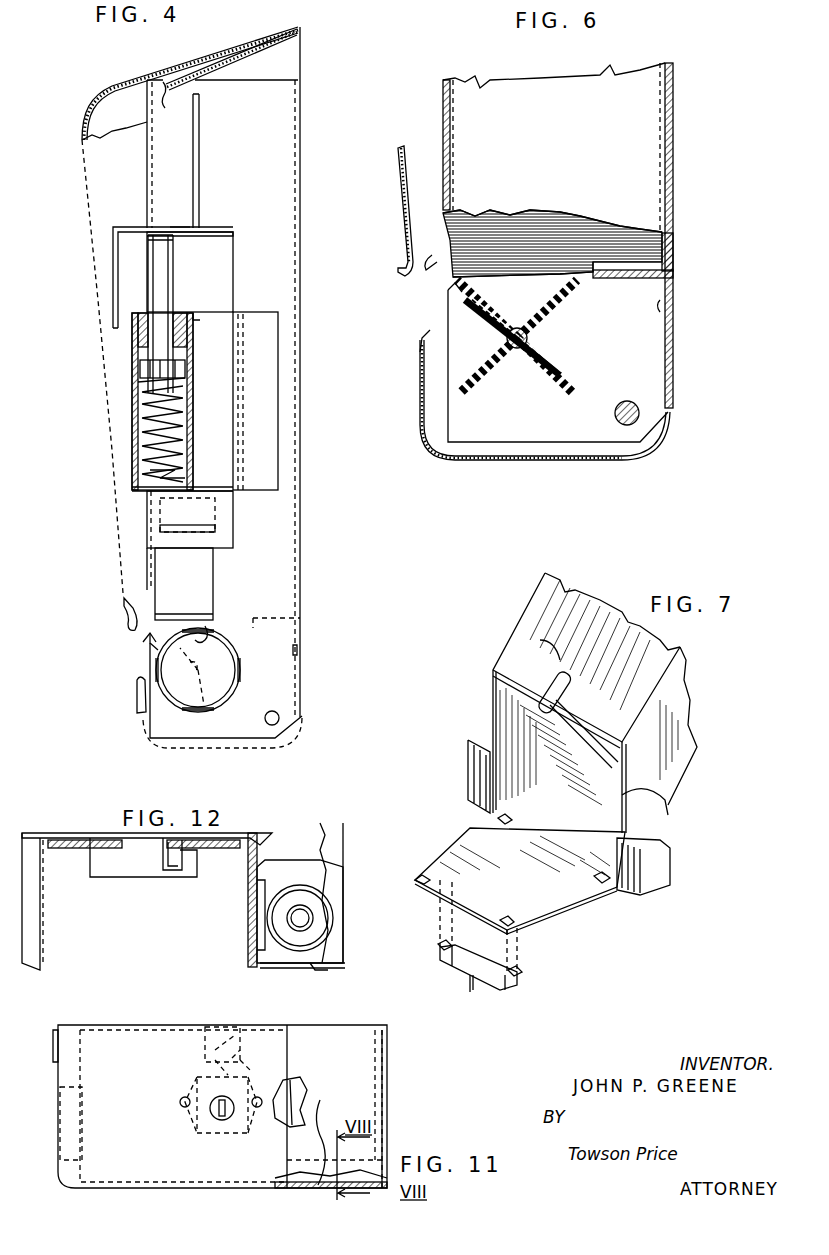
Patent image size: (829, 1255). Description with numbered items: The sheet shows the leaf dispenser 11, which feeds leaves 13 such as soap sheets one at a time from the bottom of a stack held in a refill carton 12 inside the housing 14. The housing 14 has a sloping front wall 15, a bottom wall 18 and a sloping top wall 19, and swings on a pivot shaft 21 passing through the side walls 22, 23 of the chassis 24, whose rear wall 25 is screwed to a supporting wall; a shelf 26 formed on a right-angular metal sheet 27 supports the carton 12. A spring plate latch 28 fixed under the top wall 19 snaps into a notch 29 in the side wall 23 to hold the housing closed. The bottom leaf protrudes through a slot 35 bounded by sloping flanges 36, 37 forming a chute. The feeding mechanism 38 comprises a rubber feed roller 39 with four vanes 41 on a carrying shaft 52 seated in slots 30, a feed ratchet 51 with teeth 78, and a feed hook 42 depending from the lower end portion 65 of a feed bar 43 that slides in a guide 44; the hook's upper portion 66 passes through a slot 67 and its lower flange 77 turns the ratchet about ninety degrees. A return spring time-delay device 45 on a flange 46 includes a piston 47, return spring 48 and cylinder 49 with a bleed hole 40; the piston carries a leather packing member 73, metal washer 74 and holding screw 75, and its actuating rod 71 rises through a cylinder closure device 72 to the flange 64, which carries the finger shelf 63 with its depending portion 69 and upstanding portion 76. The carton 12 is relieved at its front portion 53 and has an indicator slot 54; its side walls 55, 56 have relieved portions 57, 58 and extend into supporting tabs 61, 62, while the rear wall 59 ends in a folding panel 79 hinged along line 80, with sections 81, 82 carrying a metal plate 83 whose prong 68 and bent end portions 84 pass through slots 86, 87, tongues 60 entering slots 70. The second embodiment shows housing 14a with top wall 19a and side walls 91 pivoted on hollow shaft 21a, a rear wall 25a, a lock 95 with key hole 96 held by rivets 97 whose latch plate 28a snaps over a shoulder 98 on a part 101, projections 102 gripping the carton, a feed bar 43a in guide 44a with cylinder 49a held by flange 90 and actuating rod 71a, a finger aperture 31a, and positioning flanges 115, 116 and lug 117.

In FIG. 4, the leaf dispenser 11 is at (76, 264).
In FIG. 6, the leaf dispenser 11 is at (692, 318).
In FIG. 6, the refill carton 12 is at (573, 145).
In FIG. 7, the refill carton 12 is at (705, 760).
In FIG. 6, the leaves 13 is at (603, 248).
In FIG. 6, the housing 14 is at (394, 155).
In FIG. 11, the dispenser housing 14a is at (400, 1112).
In FIG. 6, the front wall 15 is at (402, 232).
In FIG. 6, the bottom wall 18 is at (548, 466).
In FIG. 4, the top wall 19 is at (153, 75).
In FIG. 11, the top wall 19a is at (110, 1156).
In FIG. 4, the pivot shaft 21 is at (279, 716).
In FIG. 6, the pivot shaft 21 is at (640, 416).
In FIG. 11, the pivot shaft 21a is at (52, 1032).
In FIG. 6, the chassis side wall 22 is at (645, 376).
In FIG. 4, the chassis side wall 23 is at (146, 100).
In FIG. 6, the chassis side wall 23 is at (448, 145).
In FIG. 4, the chassis 24 is at (242, 752).
In FIG. 6, the chassis 24 is at (604, 454).
In FIG. 4, the rear wall 25 is at (303, 316).
In FIG. 6, the rear wall 25 is at (676, 158).
In FIG. 12, the rear wall 25a is at (98, 832).
In FIG. 4, the shelf 26 is at (305, 605).
In FIG. 6, the shelf 26 is at (688, 270).
In FIG. 4, the right-angular metal sheet 27 is at (305, 655).
In FIG. 6, the right-angular metal sheet 27 is at (675, 306).
In FIG. 4, the spring plate latch 28 is at (218, 62).
In FIG. 11, the latch plate 28a is at (245, 1068).
In FIG. 4, the notch 29 is at (171, 107).
In FIG. 4, the slots 30 is at (150, 645).
In FIG. 6, the slots 30 is at (450, 296).
In FIG. 11, the finger aperture 31a is at (334, 1139).
In FIG. 4, the slot 35 is at (135, 640).
In FIG. 6, the slot 35 is at (420, 320).
In FIG. 4, the upper flange 36 is at (122, 600).
In FIG. 6, the upper flange 36 is at (432, 255).
In FIG. 4, the lower flange 37 is at (135, 700).
In FIG. 6, the lower flange 37 is at (420, 362).
In FIG. 4, the feeding mechanism 38 is at (134, 215).
In FIG. 6, the feed roller 39 is at (538, 380).
In FIG. 4, the bleed hole 40 is at (185, 468).
In FIG. 6, the vanes 41 is at (570, 295).
In FIG. 4, the feed hook 42 is at (212, 596).
In FIG. 4, the feed bar 43 is at (230, 265).
In FIG. 12, the feed bar 43a is at (280, 970).
In FIG. 4, the guide 44 is at (226, 330).
In FIG. 12, the guide 44a is at (275, 840).
In FIG. 4, the return spring time-delay device 45 is at (198, 396).
In FIG. 4, the flange 46 is at (132, 492).
In FIG. 4, the piston 47 is at (135, 374).
In FIG. 4, the return spring 48 is at (135, 438).
In FIG. 4, the cylinder 49 is at (188, 434).
In FIG. 12, the cylinder 49a is at (318, 968).
In FIG. 4, the feed ratchet 51 is at (225, 672).
In FIG. 4, the carrying shaft 52 is at (198, 715).
In FIG. 6, the carrying shaft 52 is at (540, 326).
In FIG. 7, the relieved front portion 53 is at (540, 640).
In FIG. 7, the slot 54 is at (580, 665).
In FIG. 7, the carton side wall 55 is at (530, 733).
In FIG. 7, the carton side wall 56 is at (678, 742).
In FIG. 7, the relieved portion 57 is at (490, 712).
In FIG. 7, the relieved portion 58 is at (672, 812).
In FIG. 7, the rear wall 59 is at (596, 827).
In FIG. 7, the tongues 60 is at (410, 880).
In FIG. 7, the supporting tab 61 is at (468, 775).
In FIG. 7, the supporting tab 62 is at (662, 872).
In FIG. 4, the shelf 63 is at (178, 220).
In FIG. 4, the flange 64 is at (224, 228).
In FIG. 4, the lower end portion 65 is at (240, 536).
In FIG. 4, the upper portion 66 is at (225, 512).
In FIG. 4, the slot 67 is at (220, 528).
In FIG. 6, the prong 68 is at (676, 245).
In FIG. 7, the prong 68 is at (472, 992).
In FIG. 4, the depending portion 69 is at (112, 285).
In FIG. 7, the slots 70 is at (512, 820).
In FIG. 4, the actuating rod 71 is at (172, 288).
In FIG. 12, the actuating rod 71a is at (318, 920).
In FIG. 4, the cylinder closure device 72 is at (200, 312).
In FIG. 4, the leather packing member 73 is at (186, 372).
In FIG. 4, the metal washer 74 is at (140, 386).
In FIG. 4, the holding screw 75 is at (192, 424).
In FIG. 4, the upstanding portion 76 is at (200, 172).
In FIG. 4, the lower flange 77 is at (218, 630).
In FIG. 4, the ratchet teeth 78 is at (215, 640).
In FIG. 7, the folding panel 79 is at (590, 910).
In FIG. 7, the hinge line 80 is at (575, 862).
In FIG. 7, the panel section 81 is at (462, 832).
In FIG. 7, the panel section 82 is at (436, 860).
In FIG. 7, the bracket 83 is at (448, 980).
In FIG. 7, the bent end portions 84 is at (438, 948).
In FIG. 7, the slot 86 is at (432, 888).
In FIG. 7, the slot 87 is at (520, 930).
In FIG. 12, the flange 90 is at (326, 832).
In FIG. 12, the side walls 91 is at (45, 938).
In FIG. 11, the lock 95 is at (245, 1140).
In FIG. 11, the key hole 96 is at (216, 1122).
In FIG. 11, the rivets 97 is at (178, 1100).
In FIG. 12, the shoulder 98 is at (174, 870).
In FIG. 11, the shoulder 98 is at (205, 1058).
In FIG. 12, the part 101 is at (160, 872).
In FIG. 11, the projections 102 is at (300, 1078).
In FIG. 11, the outstanding flange 115 is at (75, 1025).
In FIG. 12, the outstanding flange 116 is at (348, 1035).
In FIG. 12, the lug 117 is at (42, 905).
In FIG. 11, the lug 117 is at (58, 1135).